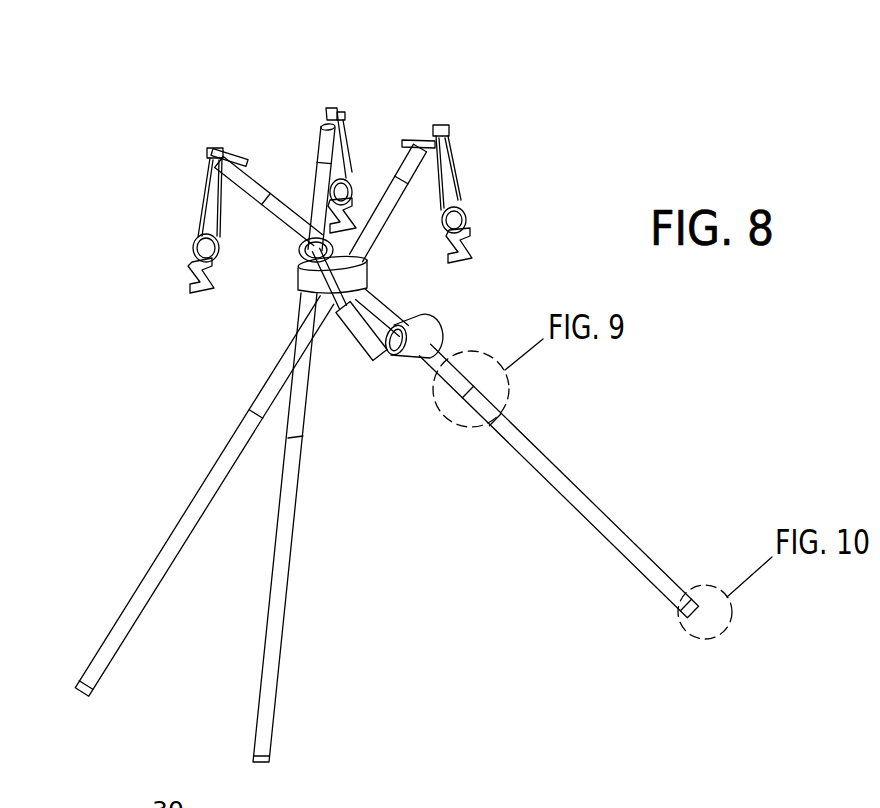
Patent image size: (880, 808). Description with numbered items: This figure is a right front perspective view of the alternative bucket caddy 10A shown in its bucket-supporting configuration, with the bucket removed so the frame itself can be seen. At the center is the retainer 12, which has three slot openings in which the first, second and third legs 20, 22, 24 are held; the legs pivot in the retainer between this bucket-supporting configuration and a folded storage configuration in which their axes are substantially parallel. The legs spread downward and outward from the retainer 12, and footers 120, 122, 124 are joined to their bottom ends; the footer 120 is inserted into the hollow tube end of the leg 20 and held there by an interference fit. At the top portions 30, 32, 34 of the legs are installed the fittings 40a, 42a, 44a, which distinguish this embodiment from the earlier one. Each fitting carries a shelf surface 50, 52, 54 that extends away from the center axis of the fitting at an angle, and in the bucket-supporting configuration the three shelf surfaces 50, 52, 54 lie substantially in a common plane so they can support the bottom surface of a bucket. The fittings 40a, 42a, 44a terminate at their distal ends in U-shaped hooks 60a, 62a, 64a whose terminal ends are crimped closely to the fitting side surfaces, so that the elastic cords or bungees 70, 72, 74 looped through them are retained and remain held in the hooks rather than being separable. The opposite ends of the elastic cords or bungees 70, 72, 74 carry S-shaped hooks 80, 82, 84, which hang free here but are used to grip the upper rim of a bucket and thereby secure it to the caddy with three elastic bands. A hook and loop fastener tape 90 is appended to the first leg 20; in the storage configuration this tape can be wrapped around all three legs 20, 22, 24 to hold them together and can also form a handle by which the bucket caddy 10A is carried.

The bucket caddy 10A is at (582, 168).
The retainer 12 is at (367, 272).
The first leg 20 is at (600, 513).
The second leg 22 is at (167, 550).
The third leg 24 is at (286, 632).
The top portion of the first leg 30 is at (428, 360).
The top portion of the second leg 32 is at (272, 385).
The top portion of the third leg 34 is at (303, 410).
The fitting 40a is at (260, 190).
The fitting 42a is at (410, 142).
The fitting 44a is at (318, 148).
The shelf surface 50 is at (220, 150).
The shelf surface 52 is at (443, 125).
The shelf surface 54 is at (317, 145).
The U-shaped hook 60a is at (210, 148).
The U-shaped hook 62a is at (450, 131).
The U-shaped hook 64a is at (328, 108).
The elastic cord or bungee 70 is at (200, 207).
The elastic cord or bungee 72 is at (460, 170).
The elastic cord or bungee 74 is at (345, 182).
The S-shaped hook 80 is at (193, 283).
The S-shaped hook 82 is at (470, 243).
The S-shaped hook 84 is at (358, 208).
The hook and loop fastener tape 90 is at (427, 329).
The footer 120 is at (712, 617).
The footer 122 is at (80, 700).
The footer 124 is at (272, 765).